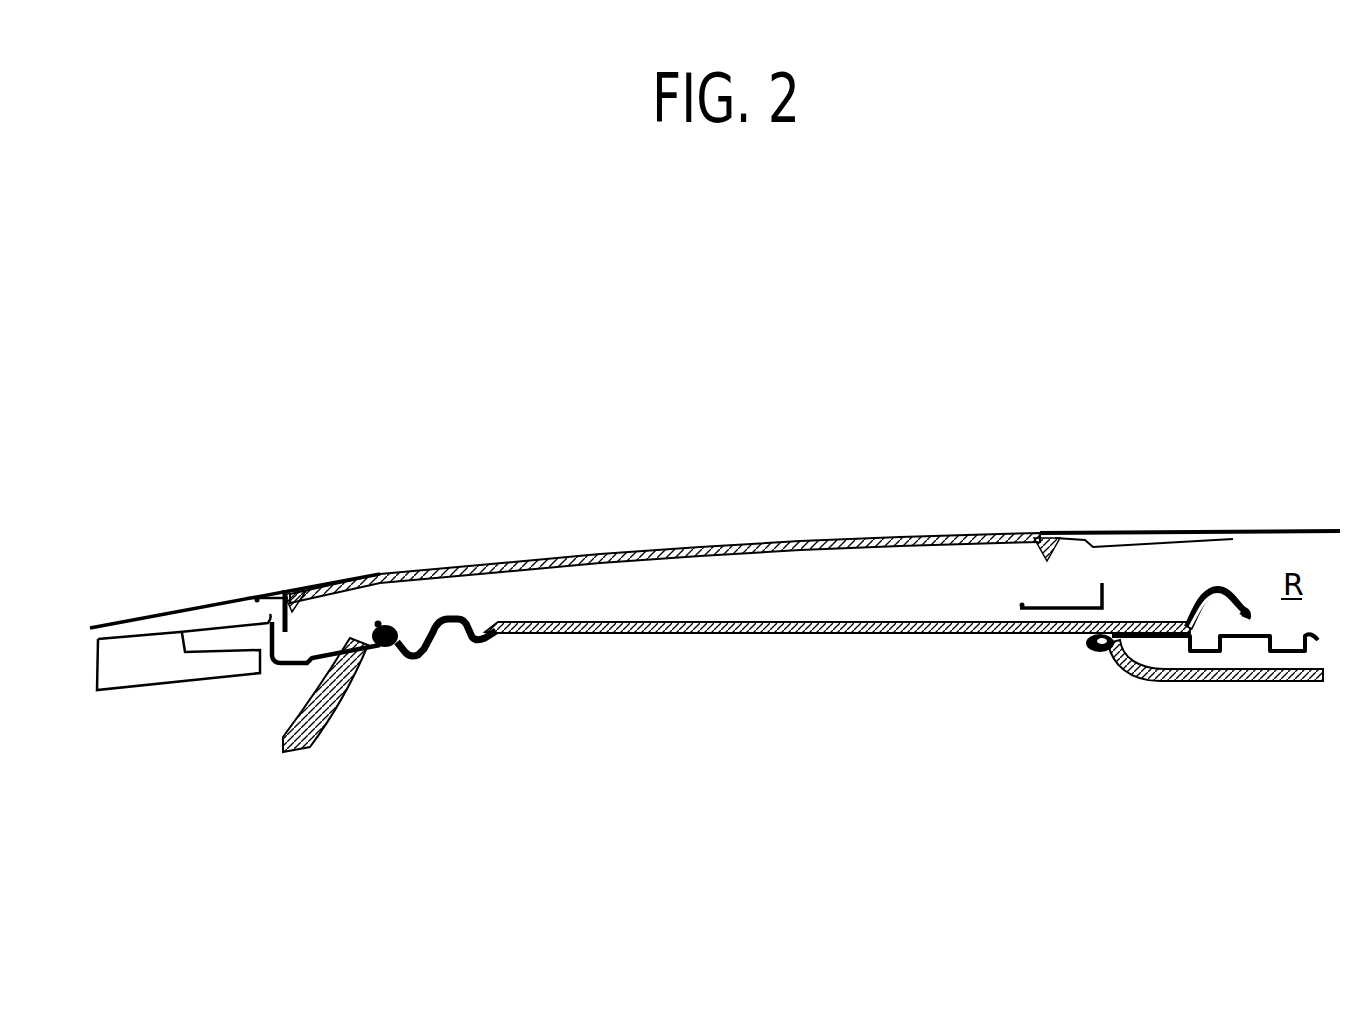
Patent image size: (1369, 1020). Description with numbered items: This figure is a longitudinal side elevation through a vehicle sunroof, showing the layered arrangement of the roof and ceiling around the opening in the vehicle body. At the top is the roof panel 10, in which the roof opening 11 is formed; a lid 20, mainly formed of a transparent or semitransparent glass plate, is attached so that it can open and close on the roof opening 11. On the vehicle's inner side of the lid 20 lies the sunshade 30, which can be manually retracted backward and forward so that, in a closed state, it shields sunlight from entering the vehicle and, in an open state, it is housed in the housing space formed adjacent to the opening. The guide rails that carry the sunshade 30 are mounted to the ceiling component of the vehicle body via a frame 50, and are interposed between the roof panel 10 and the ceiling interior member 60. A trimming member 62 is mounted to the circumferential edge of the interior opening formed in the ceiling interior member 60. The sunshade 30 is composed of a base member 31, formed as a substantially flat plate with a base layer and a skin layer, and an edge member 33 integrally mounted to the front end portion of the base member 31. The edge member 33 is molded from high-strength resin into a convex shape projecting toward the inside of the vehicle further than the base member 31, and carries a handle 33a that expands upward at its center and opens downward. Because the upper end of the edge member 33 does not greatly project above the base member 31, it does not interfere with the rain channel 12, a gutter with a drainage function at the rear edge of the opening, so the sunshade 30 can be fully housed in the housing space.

The roof panel 10 is at (177, 610).
The roof opening 11 is at (298, 590).
The rain channel 12 is at (1020, 606).
The lid 20 is at (733, 545).
The sunshade 30 is at (822, 660).
The base member 31 is at (848, 636).
The edge member 33 is at (418, 652).
The handle 33a is at (450, 630).
The frame 50 is at (297, 665).
The ceiling interior member 60 is at (313, 746).
The trimming member 62 is at (387, 650).